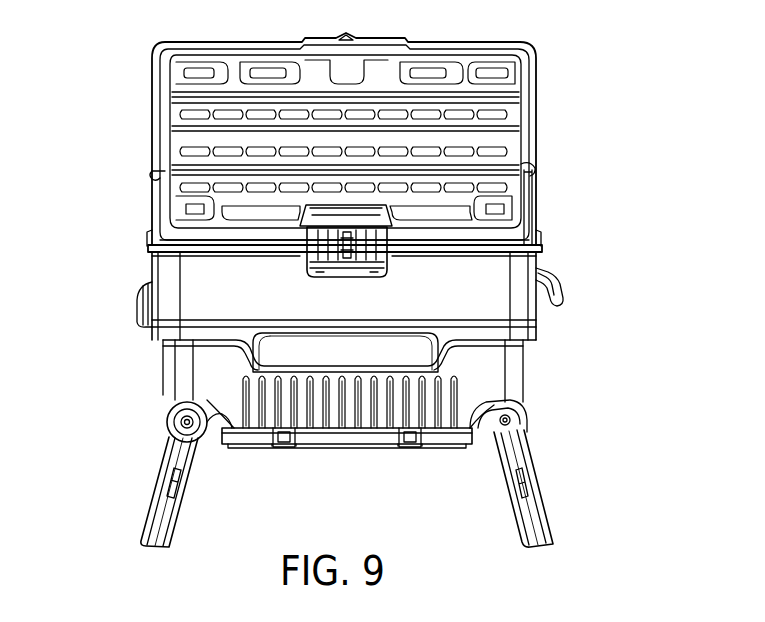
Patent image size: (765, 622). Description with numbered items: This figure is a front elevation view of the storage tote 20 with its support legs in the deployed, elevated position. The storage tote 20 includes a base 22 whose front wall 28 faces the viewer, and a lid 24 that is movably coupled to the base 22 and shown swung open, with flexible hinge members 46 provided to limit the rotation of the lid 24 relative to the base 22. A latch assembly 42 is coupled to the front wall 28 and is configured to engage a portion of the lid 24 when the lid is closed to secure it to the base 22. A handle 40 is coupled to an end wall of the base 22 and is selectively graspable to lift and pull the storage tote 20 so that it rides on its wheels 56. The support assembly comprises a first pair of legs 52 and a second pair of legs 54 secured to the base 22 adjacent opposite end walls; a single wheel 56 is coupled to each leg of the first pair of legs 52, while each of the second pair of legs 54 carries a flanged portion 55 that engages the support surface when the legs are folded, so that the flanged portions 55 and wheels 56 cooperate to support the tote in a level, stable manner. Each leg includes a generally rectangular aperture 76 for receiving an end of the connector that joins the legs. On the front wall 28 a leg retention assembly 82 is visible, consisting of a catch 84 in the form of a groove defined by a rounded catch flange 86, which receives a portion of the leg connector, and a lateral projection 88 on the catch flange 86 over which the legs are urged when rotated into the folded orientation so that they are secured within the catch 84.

The storage tote 20 is at (548, 67).
The base 22 is at (550, 250).
The lid 24 is at (454, 44).
The front wall 28 is at (193, 286).
The handle 40 is at (558, 284).
The latch assembly 42 is at (391, 282).
The flexible hinge member 46 is at (158, 227).
The first pair of legs 52 is at (190, 466).
The second pair of legs 54 is at (534, 458).
The flanged portion 55 is at (519, 418).
The wheel 56 is at (167, 420).
The aperture 76 is at (172, 483).
The leg retention assembly 82 is at (260, 502).
The catch 84 is at (301, 452).
The catch flange 86 is at (280, 440).
The lateral projection 88 is at (285, 440).